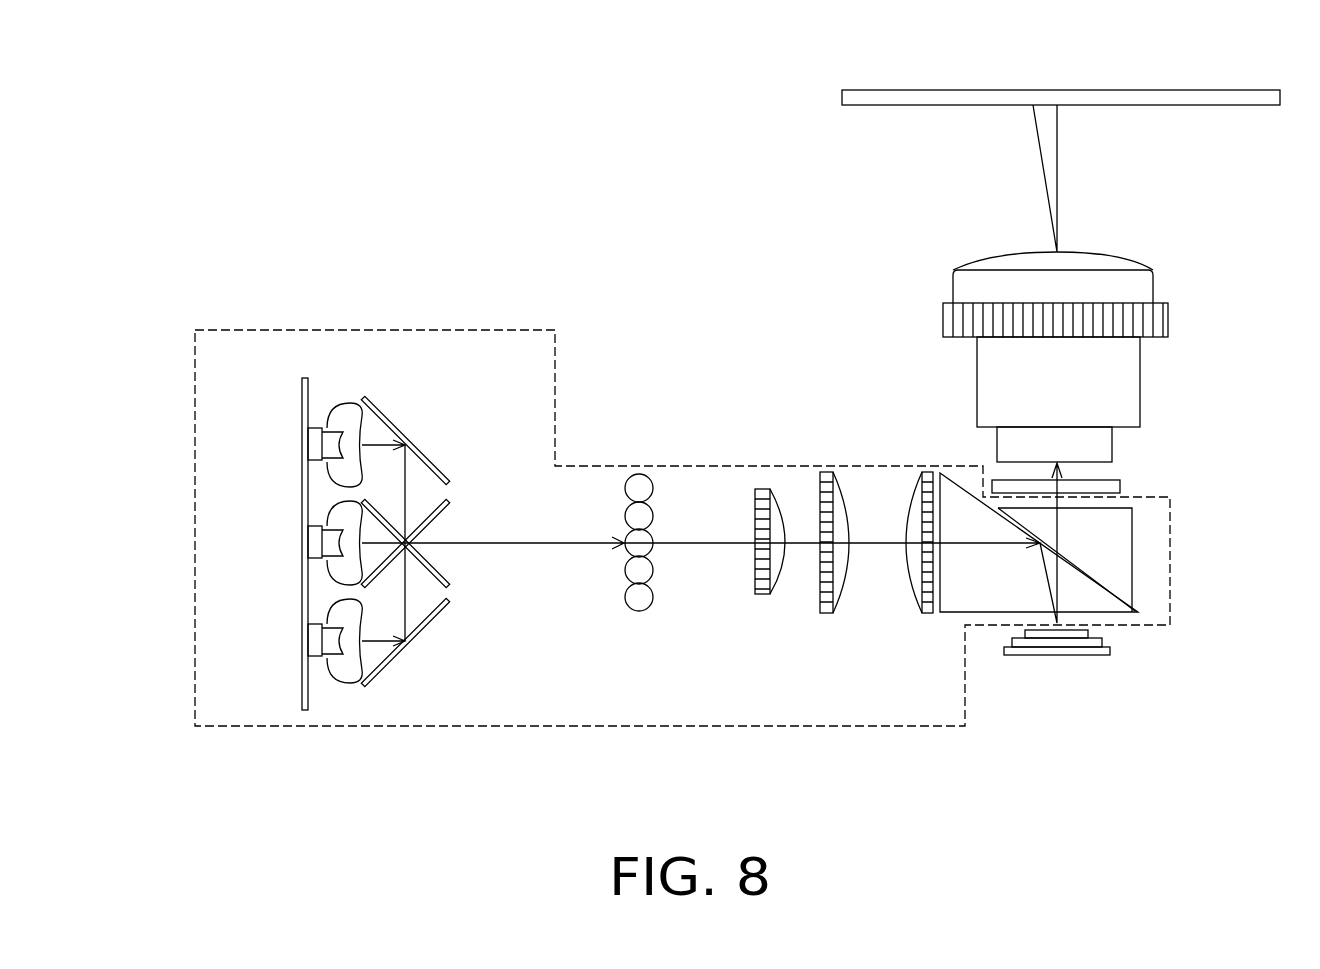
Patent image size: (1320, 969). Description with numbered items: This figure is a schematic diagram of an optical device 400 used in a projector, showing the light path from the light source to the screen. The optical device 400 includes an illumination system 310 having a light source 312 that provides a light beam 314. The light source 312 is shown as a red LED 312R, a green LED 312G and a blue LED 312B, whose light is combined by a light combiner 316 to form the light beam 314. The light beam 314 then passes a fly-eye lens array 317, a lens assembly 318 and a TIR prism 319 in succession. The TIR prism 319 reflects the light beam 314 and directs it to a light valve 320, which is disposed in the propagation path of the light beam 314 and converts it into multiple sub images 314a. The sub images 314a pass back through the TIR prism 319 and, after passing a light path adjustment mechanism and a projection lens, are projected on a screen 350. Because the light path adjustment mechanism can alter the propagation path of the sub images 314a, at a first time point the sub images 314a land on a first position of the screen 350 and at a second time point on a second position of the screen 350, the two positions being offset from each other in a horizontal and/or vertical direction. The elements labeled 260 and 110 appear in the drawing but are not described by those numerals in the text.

The optical device 400 is at (210, 56).
The screen 350 is at (842, 93).
The projection lens 260 is at (1125, 392).
The optical element 110 is at (1118, 488).
The illumination system 310 is at (680, 465).
The light source 312 is at (256, 370).
The red LED 312R is at (317, 447).
The green LED 312G is at (281, 539).
The blue LED 312B is at (281, 637).
The light beam 314 is at (533, 545).
The sub images 314a is at (1058, 527).
The light combiner 316 is at (360, 370).
The fly-eye lens array 317 is at (648, 598).
The lens assembly 318 is at (748, 455).
The TIR prism 319 is at (1148, 568).
The light valve 320 is at (1063, 636).